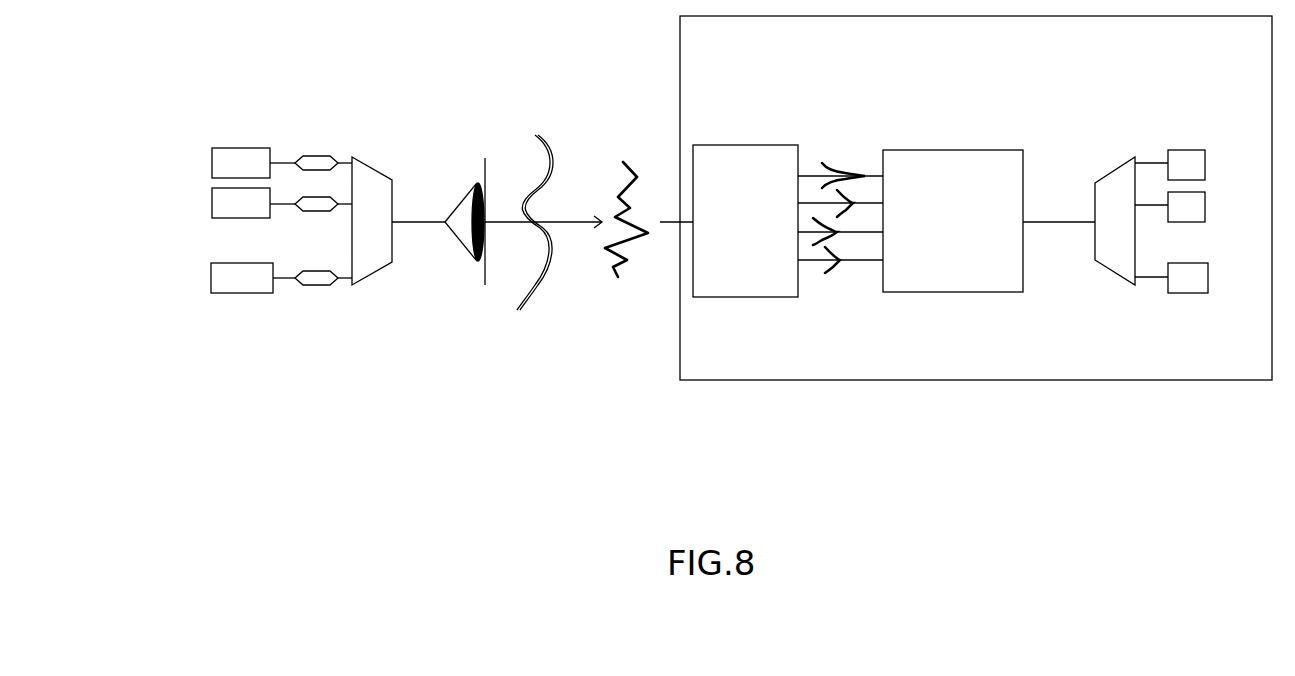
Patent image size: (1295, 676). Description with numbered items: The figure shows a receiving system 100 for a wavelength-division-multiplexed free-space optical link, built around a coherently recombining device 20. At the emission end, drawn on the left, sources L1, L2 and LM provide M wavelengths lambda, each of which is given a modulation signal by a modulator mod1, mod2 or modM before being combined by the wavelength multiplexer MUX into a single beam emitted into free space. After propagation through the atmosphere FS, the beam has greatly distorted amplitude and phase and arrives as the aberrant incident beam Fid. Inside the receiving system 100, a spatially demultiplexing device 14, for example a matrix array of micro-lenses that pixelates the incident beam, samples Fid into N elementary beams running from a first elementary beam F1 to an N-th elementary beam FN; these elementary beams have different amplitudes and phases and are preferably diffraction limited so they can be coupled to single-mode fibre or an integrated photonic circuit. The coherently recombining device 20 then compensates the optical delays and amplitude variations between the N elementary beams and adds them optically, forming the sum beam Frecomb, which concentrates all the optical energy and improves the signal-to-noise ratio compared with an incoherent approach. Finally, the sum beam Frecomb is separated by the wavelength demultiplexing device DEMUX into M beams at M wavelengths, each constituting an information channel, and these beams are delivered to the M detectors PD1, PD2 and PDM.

The spatially demultiplexing device 14 is at (750, 145).
The coherently recombining device 20 is at (957, 150).
The receiving system 100 is at (973, 380).
The laser source of wavelength λ1 L1 is at (210, 162).
The laser source of wavelength λ2 L2 is at (210, 203).
The laser source of wavelength λM LM is at (210, 278).
The modulator mod1 is at (316, 156).
The modulator mod2 is at (316, 211).
The modulator modM is at (316, 285).
The wavelength multiplexer λ MUX is at (376, 168).
The atmosphere FS is at (508, 174).
The incident beam Fid is at (628, 160).
The multiplexed wavelengths λ1, λ2, … λM lambda is at (808, 176).
The first elementary beam F1 is at (880, 176).
The N-th elementary beam FN is at (862, 262).
The recombined sum beam Frecomb is at (1055, 222).
The wavelength demultiplexing device λ DEMUX is at (1108, 172).
The detector PD1 is at (1188, 150).
The detector PD2 is at (1207, 205).
The detector PDM is at (1187, 293).